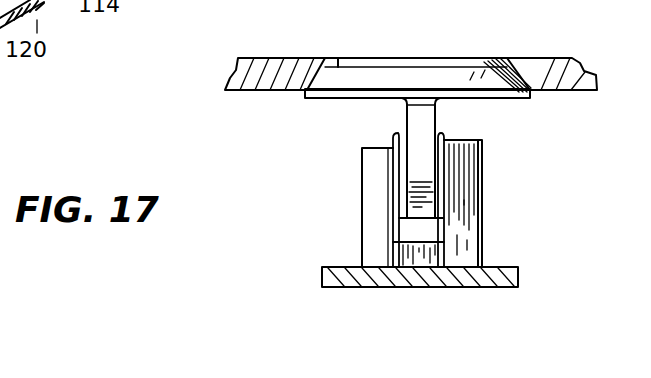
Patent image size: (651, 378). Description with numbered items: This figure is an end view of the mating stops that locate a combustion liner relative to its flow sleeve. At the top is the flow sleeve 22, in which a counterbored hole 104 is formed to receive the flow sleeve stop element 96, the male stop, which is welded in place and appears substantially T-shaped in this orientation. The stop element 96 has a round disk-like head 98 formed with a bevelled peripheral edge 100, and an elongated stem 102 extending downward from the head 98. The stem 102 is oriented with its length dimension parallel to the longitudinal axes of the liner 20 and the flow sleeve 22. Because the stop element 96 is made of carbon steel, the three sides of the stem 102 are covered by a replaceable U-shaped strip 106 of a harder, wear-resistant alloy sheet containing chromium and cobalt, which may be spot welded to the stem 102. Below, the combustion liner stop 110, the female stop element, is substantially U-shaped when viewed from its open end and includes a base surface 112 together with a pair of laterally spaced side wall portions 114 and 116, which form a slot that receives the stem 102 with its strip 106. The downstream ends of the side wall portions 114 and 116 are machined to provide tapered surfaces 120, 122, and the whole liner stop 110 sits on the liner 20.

The liner 20 is at (341, 277).
The flow sleeve 22 is at (256, 64).
The flow sleeve stop element 96 is at (355, 106).
The head 98 is at (462, 67).
The bevelled peripheral edge 100 is at (397, 80).
The elongated stem 102 is at (433, 122).
The counterbored hole 104 is at (355, 60).
The U-shaped strip 106 is at (482, 141).
The combustion liner stop 110 is at (482, 248).
The base surface 112 is at (425, 255).
The side wall portion 114 is at (362, 170).
The side wall portion 116 is at (482, 180).
The tapered surface 120 is at (368, 218).
The tapered surface 122 is at (467, 218).